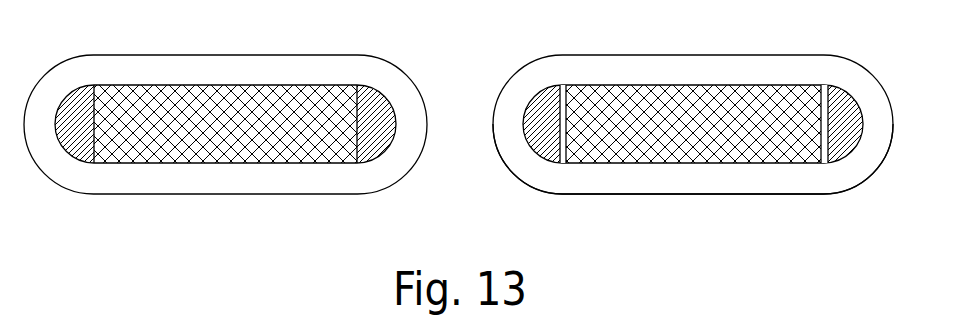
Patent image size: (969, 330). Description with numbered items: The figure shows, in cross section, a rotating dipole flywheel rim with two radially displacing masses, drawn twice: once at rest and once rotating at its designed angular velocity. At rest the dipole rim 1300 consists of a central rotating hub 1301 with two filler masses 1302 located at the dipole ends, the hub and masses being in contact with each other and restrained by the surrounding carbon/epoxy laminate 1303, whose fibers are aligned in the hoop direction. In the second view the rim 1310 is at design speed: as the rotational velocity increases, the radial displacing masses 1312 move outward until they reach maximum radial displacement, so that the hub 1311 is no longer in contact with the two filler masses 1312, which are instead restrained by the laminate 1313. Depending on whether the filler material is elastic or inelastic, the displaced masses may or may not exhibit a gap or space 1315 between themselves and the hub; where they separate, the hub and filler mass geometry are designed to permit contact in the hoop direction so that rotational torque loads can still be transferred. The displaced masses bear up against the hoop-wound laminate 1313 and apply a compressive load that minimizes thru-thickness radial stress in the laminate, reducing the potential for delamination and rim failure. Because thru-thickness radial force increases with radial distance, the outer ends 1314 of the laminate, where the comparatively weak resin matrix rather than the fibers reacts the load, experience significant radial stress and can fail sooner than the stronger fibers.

The dipole rim 1300 is at (228, 135).
The hub 1301 is at (188, 112).
The filler masses 1302 is at (380, 112).
The carbon/epoxy laminate 1303 is at (173, 178).
The rim 1310 is at (686, 129).
The hub 1311 is at (675, 112).
The filler masses 1312 is at (840, 100).
The laminate 1313 is at (613, 185).
The outer ends 1314 is at (885, 107).
The gap or space 1315 is at (558, 122).